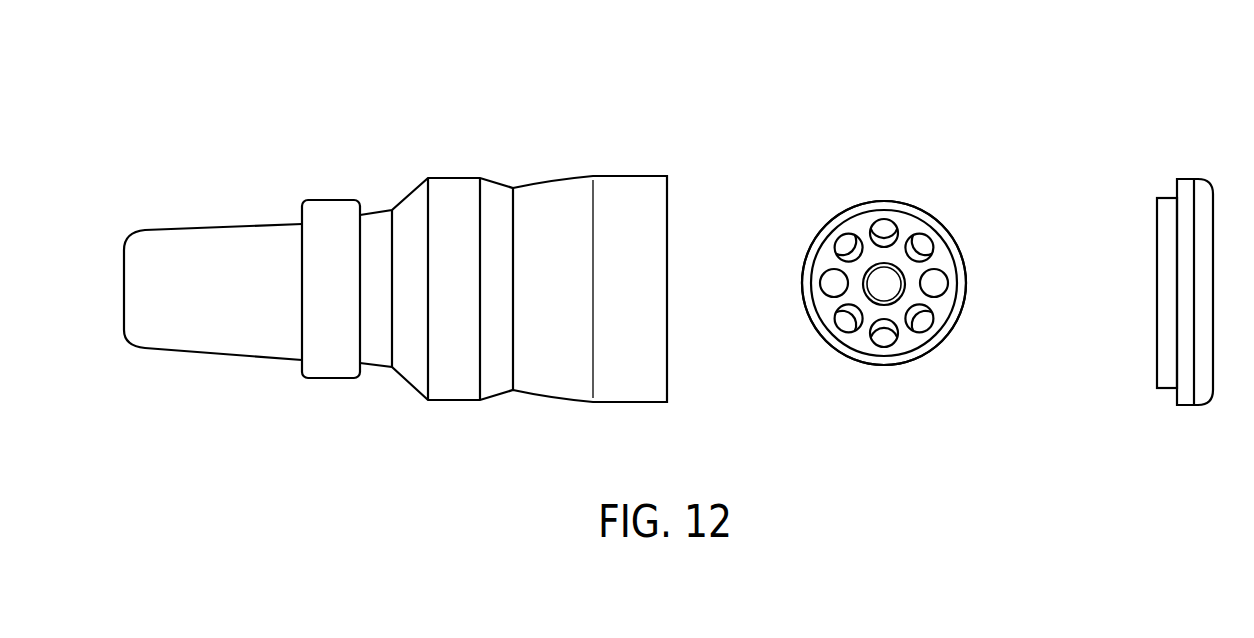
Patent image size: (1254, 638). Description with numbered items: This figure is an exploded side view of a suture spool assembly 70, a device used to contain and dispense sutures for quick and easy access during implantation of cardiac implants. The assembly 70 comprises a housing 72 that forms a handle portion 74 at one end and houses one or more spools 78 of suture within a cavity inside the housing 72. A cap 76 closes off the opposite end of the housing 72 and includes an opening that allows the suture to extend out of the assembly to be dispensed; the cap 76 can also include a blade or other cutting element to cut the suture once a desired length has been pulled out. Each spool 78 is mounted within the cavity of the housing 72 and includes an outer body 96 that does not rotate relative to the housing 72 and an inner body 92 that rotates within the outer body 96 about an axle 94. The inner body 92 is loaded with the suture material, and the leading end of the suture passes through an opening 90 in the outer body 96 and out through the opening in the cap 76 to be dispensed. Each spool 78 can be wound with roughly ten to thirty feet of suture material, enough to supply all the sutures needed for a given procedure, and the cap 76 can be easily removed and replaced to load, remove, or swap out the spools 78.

The suture spool assembly 70 is at (212, 128).
The housing 72 is at (563, 178).
The handle portion 74 is at (370, 163).
The cap 76 is at (1182, 177).
The spool 78 is at (914, 268).
The opening 90 is at (967, 282).
The inner body 92 is at (940, 305).
The axle 94 is at (888, 285).
The outer body 96 is at (848, 360).